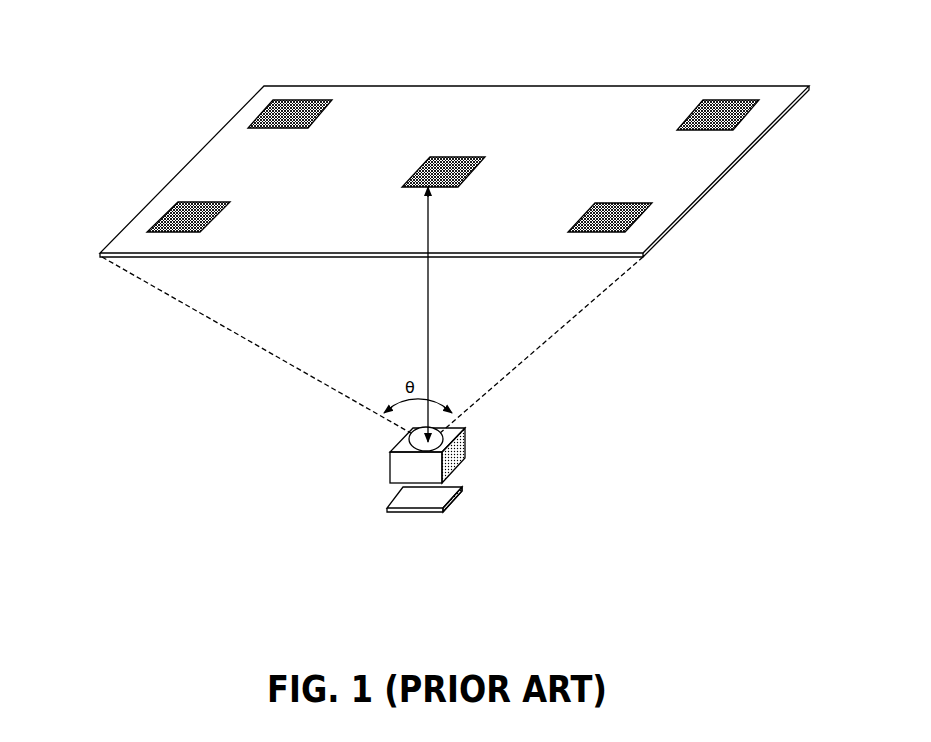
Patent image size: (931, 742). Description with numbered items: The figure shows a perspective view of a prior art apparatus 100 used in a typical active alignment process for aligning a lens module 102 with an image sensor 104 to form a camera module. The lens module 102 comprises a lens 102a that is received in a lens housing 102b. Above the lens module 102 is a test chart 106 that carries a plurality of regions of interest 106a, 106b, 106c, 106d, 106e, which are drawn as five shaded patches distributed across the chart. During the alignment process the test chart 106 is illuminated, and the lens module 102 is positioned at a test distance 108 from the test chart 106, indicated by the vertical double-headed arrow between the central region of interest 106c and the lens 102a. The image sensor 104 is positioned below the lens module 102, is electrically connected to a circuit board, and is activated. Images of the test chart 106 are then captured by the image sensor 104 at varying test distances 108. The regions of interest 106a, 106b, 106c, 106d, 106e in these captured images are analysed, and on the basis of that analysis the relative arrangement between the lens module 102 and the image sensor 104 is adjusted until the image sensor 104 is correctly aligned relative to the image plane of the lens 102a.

The prior art apparatus 100 is at (187, 96).
The lens module 102 is at (420, 436).
The lens 102a is at (420, 443).
The lens housing 102b is at (467, 447).
The image sensor 104 is at (460, 492).
The test chart 106 is at (534, 112).
The region of interest 106a is at (318, 118).
The region of interest 106b is at (215, 221).
The region of interest 106c is at (450, 157).
The region of interest 106d is at (690, 113).
The region of interest 106e is at (577, 217).
The test distance 108 is at (428, 303).